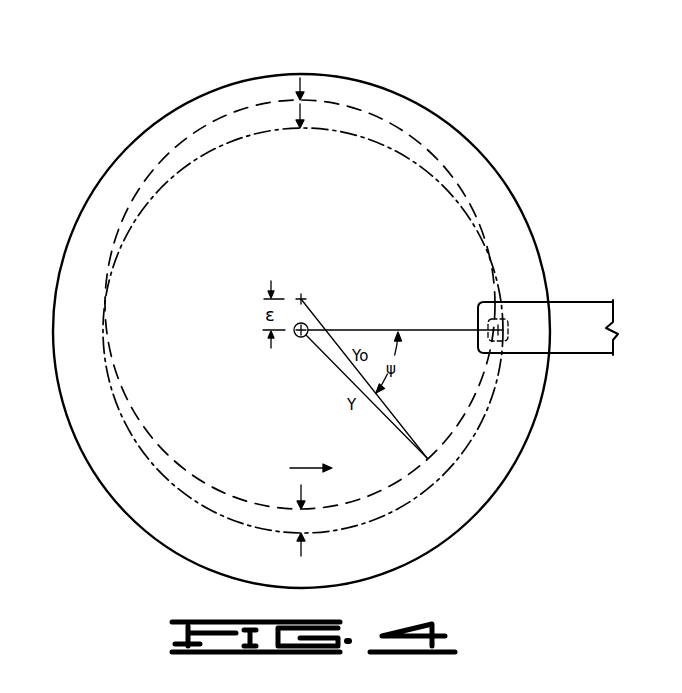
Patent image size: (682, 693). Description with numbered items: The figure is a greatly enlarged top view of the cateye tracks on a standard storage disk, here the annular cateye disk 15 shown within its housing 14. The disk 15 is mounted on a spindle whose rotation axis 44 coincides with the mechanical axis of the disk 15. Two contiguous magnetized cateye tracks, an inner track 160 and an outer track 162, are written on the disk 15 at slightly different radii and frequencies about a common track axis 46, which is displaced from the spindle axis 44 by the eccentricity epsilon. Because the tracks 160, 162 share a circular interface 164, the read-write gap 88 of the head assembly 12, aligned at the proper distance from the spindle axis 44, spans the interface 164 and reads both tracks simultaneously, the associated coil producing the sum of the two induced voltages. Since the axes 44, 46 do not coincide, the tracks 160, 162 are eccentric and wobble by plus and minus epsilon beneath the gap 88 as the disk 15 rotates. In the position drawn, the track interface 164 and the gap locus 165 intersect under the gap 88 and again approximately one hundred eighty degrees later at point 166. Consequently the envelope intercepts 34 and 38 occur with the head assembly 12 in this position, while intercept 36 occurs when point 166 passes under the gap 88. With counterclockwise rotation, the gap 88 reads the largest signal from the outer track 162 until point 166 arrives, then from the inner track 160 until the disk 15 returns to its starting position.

The head assembly 12 is at (565, 292).
The disk housing outer wall 14 is at (455, 108).
The cateye disk 15 is at (467, 158).
The envelope intercept 34 is at (497, 342).
The envelope intercept 36 is at (104, 320).
The envelope intercept 38 is at (505, 340).
The spindle axis 44 is at (296, 337).
The track axis 46 is at (301, 292).
The read-write gap 88 is at (497, 300).
The inner cateye track 160 is at (152, 177).
The outer cateye track 162 is at (208, 120).
The track interface 164 is at (404, 129).
The gap locus 165 is at (462, 215).
The intersection point 166 is at (104, 320).